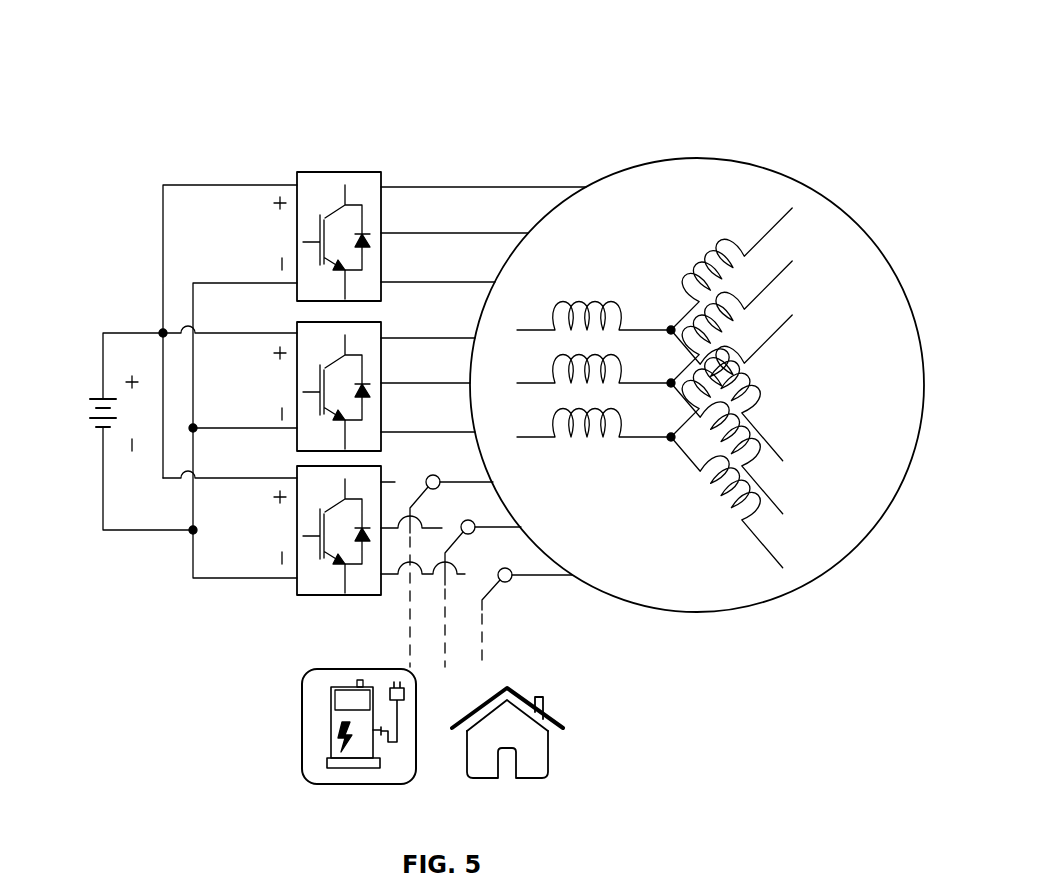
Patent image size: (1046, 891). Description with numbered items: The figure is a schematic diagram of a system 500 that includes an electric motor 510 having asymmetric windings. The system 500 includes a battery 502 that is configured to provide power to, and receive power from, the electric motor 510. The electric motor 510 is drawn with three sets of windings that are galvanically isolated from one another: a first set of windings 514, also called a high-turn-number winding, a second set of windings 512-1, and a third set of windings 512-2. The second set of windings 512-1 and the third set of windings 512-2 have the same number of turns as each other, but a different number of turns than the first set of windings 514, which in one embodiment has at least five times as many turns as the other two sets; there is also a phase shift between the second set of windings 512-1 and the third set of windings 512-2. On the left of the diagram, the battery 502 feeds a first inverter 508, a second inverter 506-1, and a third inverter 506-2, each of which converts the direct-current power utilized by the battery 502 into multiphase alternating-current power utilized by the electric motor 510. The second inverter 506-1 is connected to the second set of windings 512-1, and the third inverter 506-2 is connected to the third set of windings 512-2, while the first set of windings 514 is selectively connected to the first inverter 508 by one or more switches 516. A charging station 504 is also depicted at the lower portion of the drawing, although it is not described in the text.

The system 500 is at (121, 72).
The battery 502 is at (96, 398).
The charging station 504 is at (302, 738).
The second inverter 506-1 is at (320, 172).
The third inverter 506-2 is at (297, 331).
The first inverter 508 is at (310, 597).
The electric motor 510 is at (697, 351).
The second set of windings 512-1 is at (770, 233).
The third set of windings 512-2 is at (778, 283).
The first set of windings 514 is at (785, 330).
The switches 516 is at (493, 592).